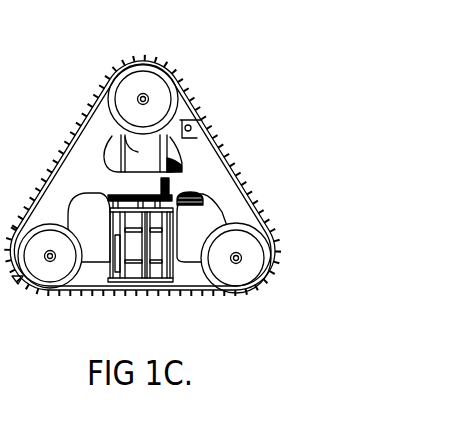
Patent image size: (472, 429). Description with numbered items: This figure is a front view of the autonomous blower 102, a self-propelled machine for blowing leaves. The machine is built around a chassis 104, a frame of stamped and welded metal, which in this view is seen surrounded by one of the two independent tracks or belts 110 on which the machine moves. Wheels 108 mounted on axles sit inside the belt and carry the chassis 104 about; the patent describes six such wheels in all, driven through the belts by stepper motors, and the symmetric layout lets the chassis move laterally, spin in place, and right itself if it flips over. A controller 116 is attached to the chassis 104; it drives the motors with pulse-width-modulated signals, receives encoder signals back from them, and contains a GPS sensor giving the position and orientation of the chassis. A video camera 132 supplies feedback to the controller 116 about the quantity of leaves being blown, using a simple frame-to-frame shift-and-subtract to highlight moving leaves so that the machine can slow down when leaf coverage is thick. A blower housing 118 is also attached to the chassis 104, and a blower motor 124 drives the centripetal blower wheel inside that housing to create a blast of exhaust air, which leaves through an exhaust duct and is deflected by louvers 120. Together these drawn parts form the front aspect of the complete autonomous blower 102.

The autonomous blower 102 is at (157, 168).
The chassis 104 is at (203, 167).
The wheels 108 is at (241, 253).
The tracks or belts 110 is at (263, 218).
The controller 116 is at (203, 126).
The blower housing 118 is at (115, 130).
The louvers 120 is at (148, 280).
The blower motor 124 is at (197, 198).
The video camera 132 is at (193, 106).